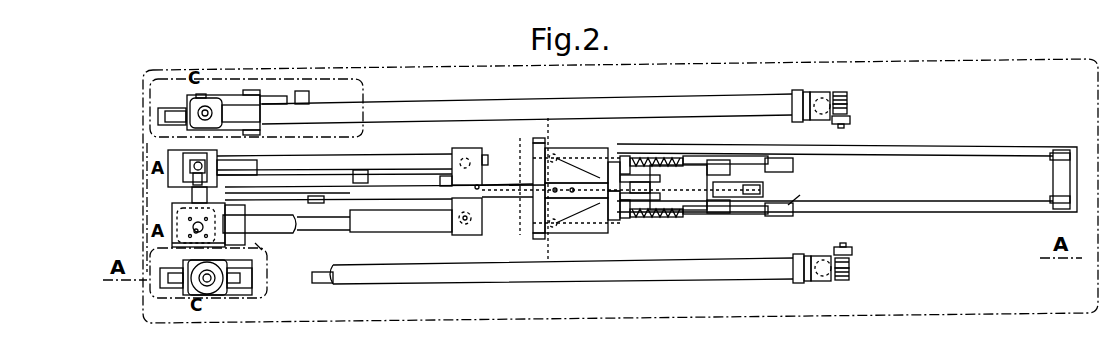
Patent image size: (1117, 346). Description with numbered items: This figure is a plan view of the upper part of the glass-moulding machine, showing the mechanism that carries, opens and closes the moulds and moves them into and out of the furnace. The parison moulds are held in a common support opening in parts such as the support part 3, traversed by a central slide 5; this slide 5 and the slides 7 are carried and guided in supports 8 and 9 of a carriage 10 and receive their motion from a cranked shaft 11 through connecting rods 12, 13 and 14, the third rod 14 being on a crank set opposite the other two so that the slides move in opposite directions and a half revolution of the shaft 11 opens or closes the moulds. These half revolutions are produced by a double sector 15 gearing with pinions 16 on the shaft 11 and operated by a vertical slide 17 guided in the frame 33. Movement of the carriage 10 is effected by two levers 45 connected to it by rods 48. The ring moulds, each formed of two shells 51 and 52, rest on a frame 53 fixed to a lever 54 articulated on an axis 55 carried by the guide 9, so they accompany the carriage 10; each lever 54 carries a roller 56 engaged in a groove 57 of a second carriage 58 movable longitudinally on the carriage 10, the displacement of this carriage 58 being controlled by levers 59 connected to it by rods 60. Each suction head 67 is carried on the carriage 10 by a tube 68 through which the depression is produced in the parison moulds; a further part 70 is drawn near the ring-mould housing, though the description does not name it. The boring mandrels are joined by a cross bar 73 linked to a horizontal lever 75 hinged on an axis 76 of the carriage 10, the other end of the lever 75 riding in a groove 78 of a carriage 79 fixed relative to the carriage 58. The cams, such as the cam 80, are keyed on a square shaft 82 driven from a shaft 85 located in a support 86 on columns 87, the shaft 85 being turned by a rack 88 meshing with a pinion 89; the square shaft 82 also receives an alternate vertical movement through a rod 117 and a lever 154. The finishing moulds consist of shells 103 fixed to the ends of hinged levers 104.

The support part 3 is at (168, 183).
The central slide 5 is at (303, 202).
The slide 7 is at (283, 202).
The support 8 is at (262, 200).
The support (guide) 9 is at (452, 233).
The carriage 10 is at (343, 155).
The cranked shaft 11 is at (645, 178).
The connecting rod 12 is at (612, 165).
The connecting rod 13 is at (612, 222).
The connecting rod 14 is at (658, 194).
The double sector 15 is at (670, 158).
The pinion 16 is at (624, 158).
The vertical slide 17 is at (763, 179).
The frame 33 is at (1018, 61).
The lever 45 is at (800, 172).
The rod 48 is at (1000, 179).
The shell 51 is at (172, 236).
The shell 52 is at (172, 218).
The frame 53 is at (172, 247).
The lever 54 is at (262, 250).
The axis 55 is at (465, 148).
The roller 56 is at (527, 189).
The groove 57 is at (566, 160).
The second carriage 58 is at (573, 222).
The lever 59 is at (790, 160).
The rod 60 is at (737, 156).
The suction head 67 is at (168, 154).
The tube 68 is at (387, 155).
The pin 70 is at (190, 234).
The cross bar 73 is at (192, 200).
The horizontal lever 75 is at (312, 203).
The axis 76 is at (365, 170).
The groove 78 is at (450, 170).
The carriage 79 is at (478, 184).
The cam 80 is at (201, 98).
The square shaft 82 is at (208, 106).
The shaft 85 is at (322, 284).
The support 86 is at (427, 108).
The column 87 is at (818, 97).
The rack 88 is at (842, 185).
The pinion 89 is at (847, 104).
The shell 103 is at (215, 292).
The lever 104 is at (158, 118).
The rod 117 is at (308, 91).
The lever 154 is at (282, 97).